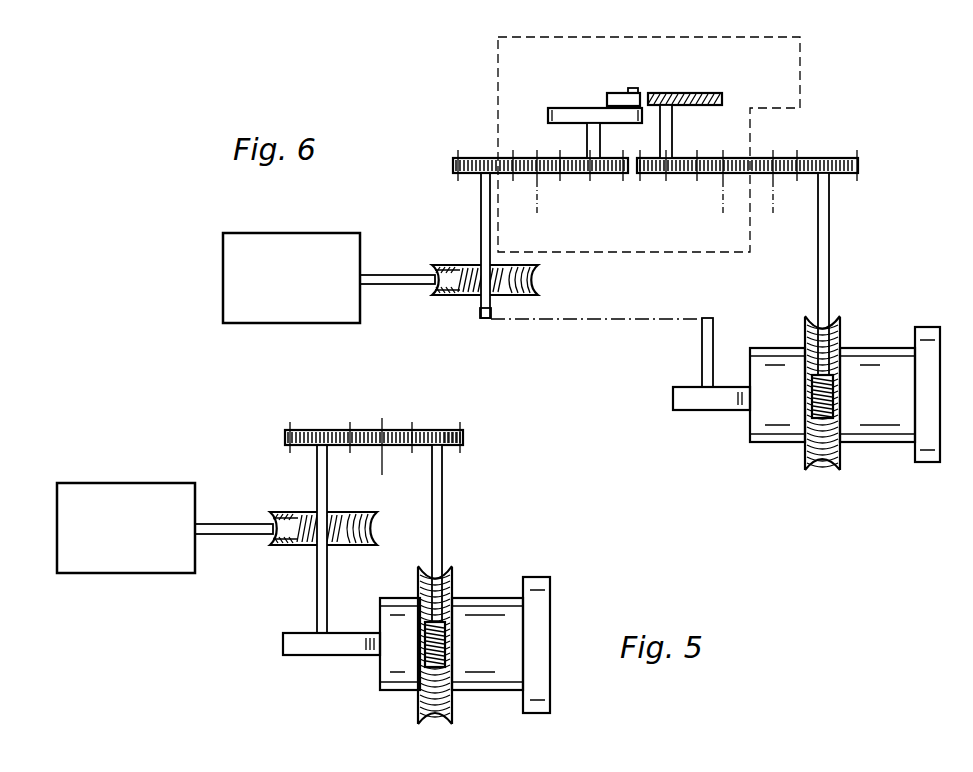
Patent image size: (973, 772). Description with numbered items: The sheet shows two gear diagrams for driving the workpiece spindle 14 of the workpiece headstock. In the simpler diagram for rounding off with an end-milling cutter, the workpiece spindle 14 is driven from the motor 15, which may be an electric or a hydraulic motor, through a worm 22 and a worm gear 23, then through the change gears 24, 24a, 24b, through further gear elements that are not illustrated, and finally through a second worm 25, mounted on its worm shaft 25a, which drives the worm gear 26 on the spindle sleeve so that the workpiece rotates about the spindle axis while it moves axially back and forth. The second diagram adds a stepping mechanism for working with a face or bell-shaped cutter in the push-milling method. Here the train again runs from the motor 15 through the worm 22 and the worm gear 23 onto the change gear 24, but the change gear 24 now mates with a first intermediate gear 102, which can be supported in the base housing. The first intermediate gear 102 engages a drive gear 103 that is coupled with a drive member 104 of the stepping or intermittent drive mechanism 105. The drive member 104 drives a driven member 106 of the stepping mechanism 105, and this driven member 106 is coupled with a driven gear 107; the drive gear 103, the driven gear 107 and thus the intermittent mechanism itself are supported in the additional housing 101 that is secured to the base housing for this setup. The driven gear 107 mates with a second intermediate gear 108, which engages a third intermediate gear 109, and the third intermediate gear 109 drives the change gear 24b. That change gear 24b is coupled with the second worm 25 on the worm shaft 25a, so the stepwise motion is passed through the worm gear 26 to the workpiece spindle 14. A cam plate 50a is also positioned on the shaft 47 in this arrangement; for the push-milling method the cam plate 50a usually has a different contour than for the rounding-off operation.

In FIG. 6, the workpiece spindle 14 is at (883, 355).
In FIG. 5, the workpiece spindle 14 is at (490, 612).
In FIG. 6, the motor 15 is at (283, 245).
In FIG. 5, the motor 15 is at (102, 495).
In FIG. 6, the worm 22 is at (460, 268).
In FIG. 5, the worm 22 is at (283, 546).
In FIG. 6, the worm gear 23 is at (540, 283).
In FIG. 5, the worm gear 23 is at (352, 546).
In FIG. 6, the change gear 24 is at (480, 157).
In FIG. 5, the change gear 24 is at (300, 430).
In FIG. 5, the change gear 24a is at (372, 430).
In FIG. 6, the change gear 24b is at (825, 157).
In FIG. 5, the change gear 24b is at (445, 430).
In FIG. 6, the second worm 25 is at (840, 345).
In FIG. 5, the second worm 25 is at (422, 666).
In FIG. 6, the worm shaft 25a is at (832, 252).
In FIG. 5, the worm shaft 25a is at (445, 508).
In FIG. 6, the worm gear 26 is at (808, 460).
In FIG. 5, the worm gear 26 is at (446, 698).
In FIG. 6, the shaft 47 is at (478, 312).
In FIG. 6, the cam plate 50a is at (680, 392).
In FIG. 6, the additional housing 101 is at (497, 73).
In FIG. 6, the first intermediate gear 102 is at (530, 177).
In FIG. 6, the drive gear 103 is at (575, 177).
In FIG. 6, the drive member 104 is at (558, 107).
In FIG. 6, the stepping mechanism 105 is at (590, 95).
In FIG. 6, the driven member 106 is at (712, 93).
In FIG. 6, the driven gear 107 is at (678, 177).
In FIG. 6, the second intermediate gear 108 is at (712, 177).
In FIG. 6, the third intermediate gear 109 is at (768, 177).